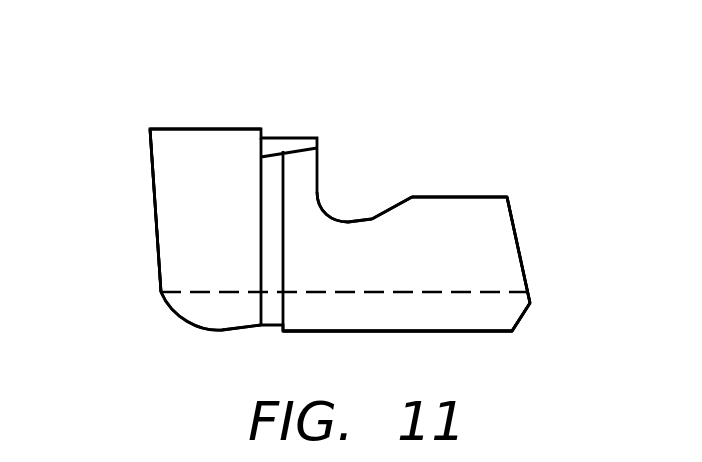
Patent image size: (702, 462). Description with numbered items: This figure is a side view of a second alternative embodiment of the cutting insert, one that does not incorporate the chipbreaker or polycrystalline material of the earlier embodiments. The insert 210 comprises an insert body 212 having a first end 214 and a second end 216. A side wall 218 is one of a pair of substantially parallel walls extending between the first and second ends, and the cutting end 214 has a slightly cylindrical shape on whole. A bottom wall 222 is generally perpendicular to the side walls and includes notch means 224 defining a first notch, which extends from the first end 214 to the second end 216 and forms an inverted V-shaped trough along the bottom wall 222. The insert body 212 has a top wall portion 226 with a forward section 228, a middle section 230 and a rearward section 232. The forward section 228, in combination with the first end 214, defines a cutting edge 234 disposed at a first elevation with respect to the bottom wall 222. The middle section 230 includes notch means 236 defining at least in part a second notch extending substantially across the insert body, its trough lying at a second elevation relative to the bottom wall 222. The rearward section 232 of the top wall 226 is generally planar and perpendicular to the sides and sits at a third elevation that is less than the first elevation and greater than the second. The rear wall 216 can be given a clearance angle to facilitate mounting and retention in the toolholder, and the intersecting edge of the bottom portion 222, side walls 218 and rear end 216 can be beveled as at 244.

The insert 210 is at (132, 167).
The insert body 212 is at (495, 334).
The first end 214 is at (153, 200).
The second end 216 is at (520, 243).
The side wall 218 is at (432, 320).
The bottom wall 222 is at (225, 331).
The notch means 224 is at (158, 292).
The top wall portion 226 is at (462, 197).
The forward section 228 is at (205, 129).
The middle section 230 is at (388, 210).
The rearward section 232 is at (493, 197).
The cutting edge 234 is at (150, 130).
The second notch means 236 is at (355, 220).
The bevel 244 is at (523, 322).